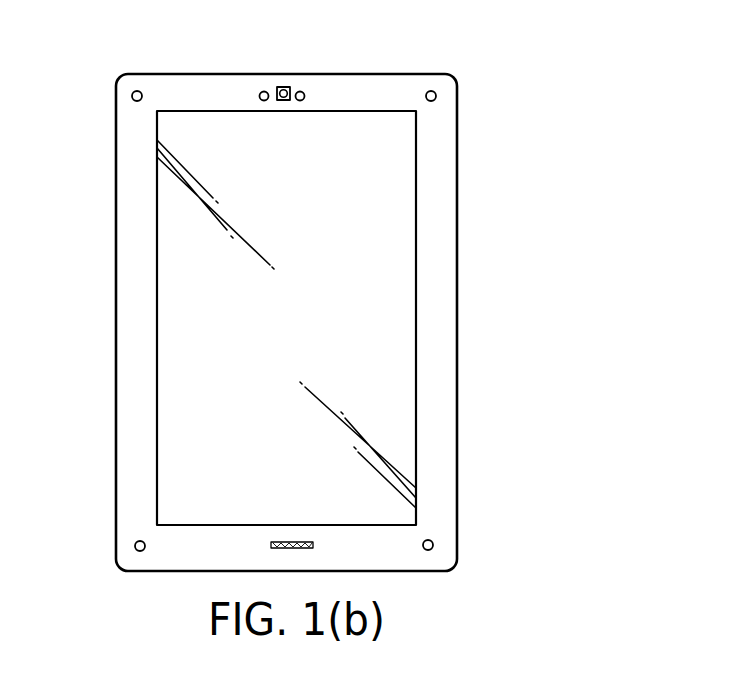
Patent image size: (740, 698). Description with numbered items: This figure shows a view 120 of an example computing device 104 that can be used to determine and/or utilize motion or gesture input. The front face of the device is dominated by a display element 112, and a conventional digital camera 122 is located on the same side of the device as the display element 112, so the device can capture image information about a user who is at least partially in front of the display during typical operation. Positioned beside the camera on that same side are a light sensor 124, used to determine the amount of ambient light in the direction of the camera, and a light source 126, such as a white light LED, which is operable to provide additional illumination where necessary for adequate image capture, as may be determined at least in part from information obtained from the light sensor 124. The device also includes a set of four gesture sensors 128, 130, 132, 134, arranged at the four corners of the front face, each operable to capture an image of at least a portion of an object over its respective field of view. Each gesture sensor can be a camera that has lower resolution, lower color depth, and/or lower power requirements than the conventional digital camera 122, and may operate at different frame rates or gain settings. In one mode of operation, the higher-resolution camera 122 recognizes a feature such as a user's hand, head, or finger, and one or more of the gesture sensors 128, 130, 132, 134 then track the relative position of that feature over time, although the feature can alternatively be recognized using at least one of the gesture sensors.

The computing device 104 is at (116, 128).
The display element 112 is at (416, 323).
The view 120 is at (608, 93).
The digital camera 122 is at (279, 88).
The light sensor 124 is at (260, 93).
The light source 126 is at (305, 92).
The gesture sensor 128 is at (133, 92).
The gesture sensor 130 is at (435, 91).
The gesture sensor 132 is at (136, 550).
The gesture sensor 134 is at (432, 550).